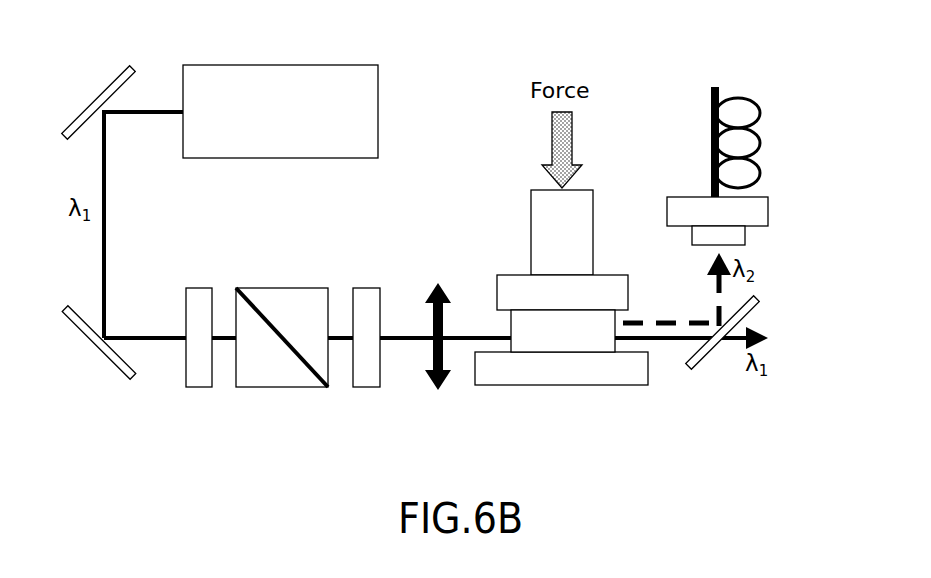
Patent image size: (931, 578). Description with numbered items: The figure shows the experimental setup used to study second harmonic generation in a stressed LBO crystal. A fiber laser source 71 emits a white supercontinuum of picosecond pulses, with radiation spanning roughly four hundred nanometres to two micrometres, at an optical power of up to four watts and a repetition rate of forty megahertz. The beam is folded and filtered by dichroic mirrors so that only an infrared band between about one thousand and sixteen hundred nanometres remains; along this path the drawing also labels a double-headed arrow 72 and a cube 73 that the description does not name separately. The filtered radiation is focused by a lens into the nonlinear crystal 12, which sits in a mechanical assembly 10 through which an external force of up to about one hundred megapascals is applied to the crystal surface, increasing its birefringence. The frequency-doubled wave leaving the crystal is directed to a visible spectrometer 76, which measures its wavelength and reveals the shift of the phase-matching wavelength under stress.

The fiber laser source 71 is at (283, 65).
The polarization direction indicator arrow 72 is at (430, 392).
The polarizing beam splitter 73 is at (288, 389).
The visible spectrometer 76 is at (778, 203).
The force sensor 10 is at (617, 240).
The nonlinear crystal 12 is at (593, 317).